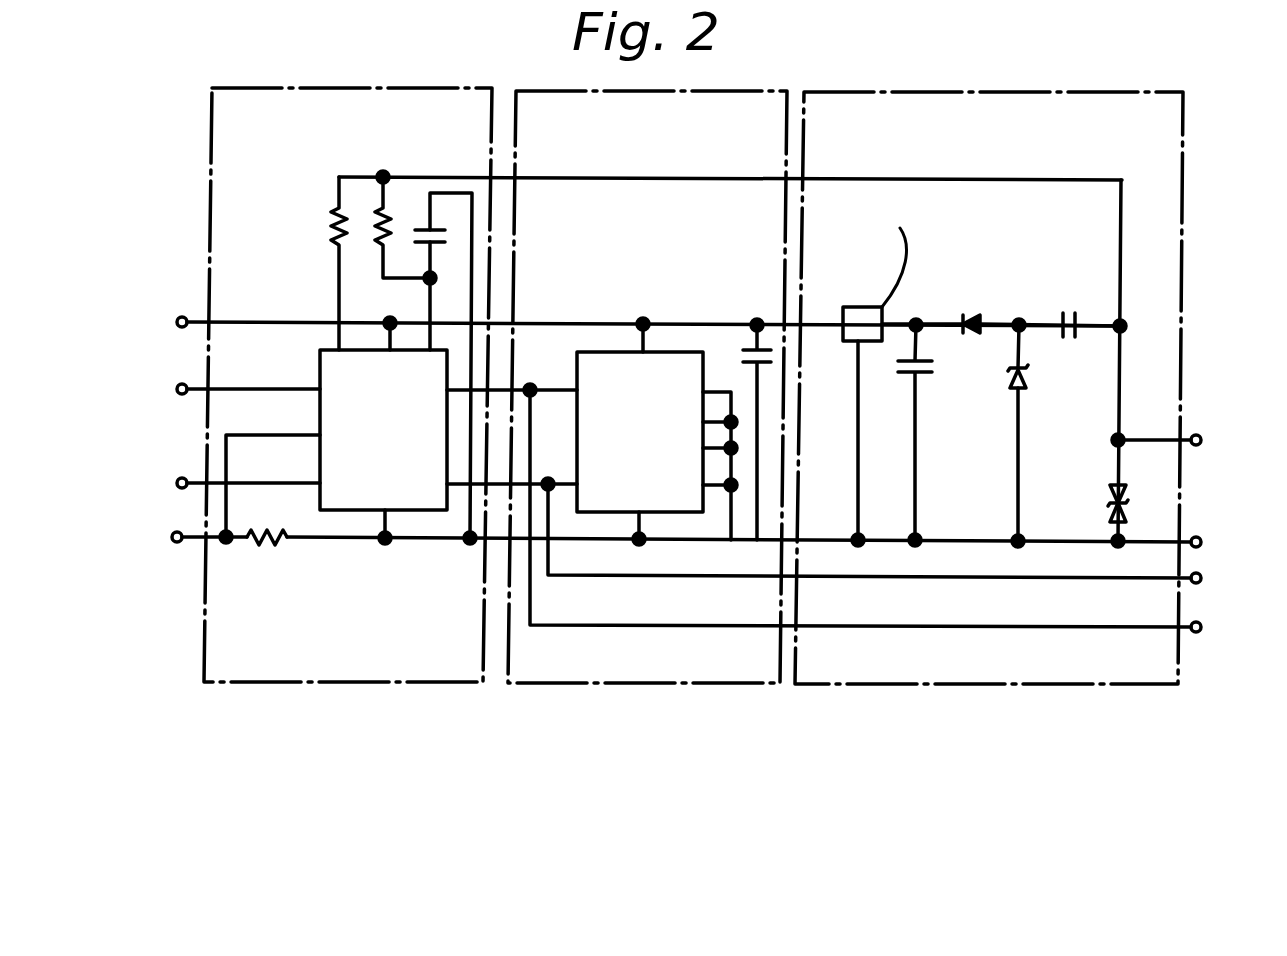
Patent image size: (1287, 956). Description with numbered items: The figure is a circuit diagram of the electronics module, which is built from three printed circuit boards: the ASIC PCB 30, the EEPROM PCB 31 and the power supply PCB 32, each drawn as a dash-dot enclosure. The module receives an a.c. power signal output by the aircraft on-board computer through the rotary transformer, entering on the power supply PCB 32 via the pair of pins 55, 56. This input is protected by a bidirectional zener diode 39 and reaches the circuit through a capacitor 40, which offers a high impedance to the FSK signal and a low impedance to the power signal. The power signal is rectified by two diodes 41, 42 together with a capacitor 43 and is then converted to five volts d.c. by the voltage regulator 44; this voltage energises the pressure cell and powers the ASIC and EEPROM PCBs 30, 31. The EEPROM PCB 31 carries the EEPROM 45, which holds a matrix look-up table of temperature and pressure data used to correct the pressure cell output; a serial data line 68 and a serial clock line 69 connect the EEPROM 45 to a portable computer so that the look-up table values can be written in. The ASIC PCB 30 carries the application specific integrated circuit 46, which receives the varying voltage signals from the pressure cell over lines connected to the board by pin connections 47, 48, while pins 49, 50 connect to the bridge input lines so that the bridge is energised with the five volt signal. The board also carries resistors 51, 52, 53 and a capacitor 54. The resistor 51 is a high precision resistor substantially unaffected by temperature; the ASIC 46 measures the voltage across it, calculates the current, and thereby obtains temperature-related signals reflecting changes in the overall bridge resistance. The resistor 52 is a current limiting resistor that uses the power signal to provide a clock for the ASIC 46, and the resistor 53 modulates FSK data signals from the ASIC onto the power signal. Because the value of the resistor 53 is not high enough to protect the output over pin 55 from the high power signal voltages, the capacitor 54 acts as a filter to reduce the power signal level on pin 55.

The ASIC PCB 30 is at (453, 683).
The EEPROM PCB 31 is at (750, 683).
The power supply PCB 32 is at (985, 684).
The bidirectional zener diode 39 is at (1100, 523).
The capacitor 40 is at (1068, 310).
The diode 41 is at (975, 315).
The diode 42 is at (1012, 386).
The capacitor 43 is at (897, 368).
The voltage regulator 44 is at (867, 307).
The EEPROM 45 is at (600, 352).
The application specific integrated circuit 46 is at (428, 510).
The pin connection 47 is at (177, 389).
The pin connection 48 is at (177, 483).
The pin 49 is at (177, 322).
The pin 50 is at (172, 540).
The resistor 51 is at (265, 550).
The resistor 52 is at (327, 223).
The resistor 53 is at (370, 213).
The capacitor 54 is at (413, 225).
The pin 55 is at (1158, 545).
The pin 56 is at (1203, 440).
The serial data line 68 is at (1157, 580).
The serial clock line 69 is at (1112, 628).